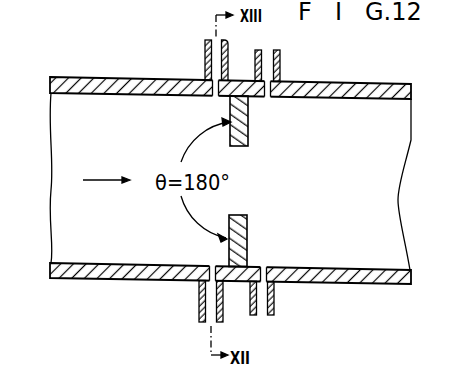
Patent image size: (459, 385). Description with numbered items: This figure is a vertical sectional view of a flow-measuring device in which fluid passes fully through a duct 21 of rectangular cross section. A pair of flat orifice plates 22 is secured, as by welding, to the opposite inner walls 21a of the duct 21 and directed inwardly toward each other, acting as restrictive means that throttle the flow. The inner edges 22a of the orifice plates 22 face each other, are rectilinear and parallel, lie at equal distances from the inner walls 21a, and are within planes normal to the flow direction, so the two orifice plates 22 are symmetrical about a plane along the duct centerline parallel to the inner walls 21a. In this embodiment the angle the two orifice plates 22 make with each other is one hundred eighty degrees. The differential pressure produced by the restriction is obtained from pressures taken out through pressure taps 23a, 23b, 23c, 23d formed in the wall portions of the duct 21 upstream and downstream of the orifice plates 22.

The duct 21 is at (230, 182).
The inner wall 21a is at (142, 92).
The orifice plate 22 is at (249, 126).
The inner edge 22a is at (238, 148).
The pressure tap 23a is at (205, 56).
The pressure tap 23b is at (281, 60).
The pressure tap 23c is at (199, 297).
The pressure tap 23d is at (274, 304).